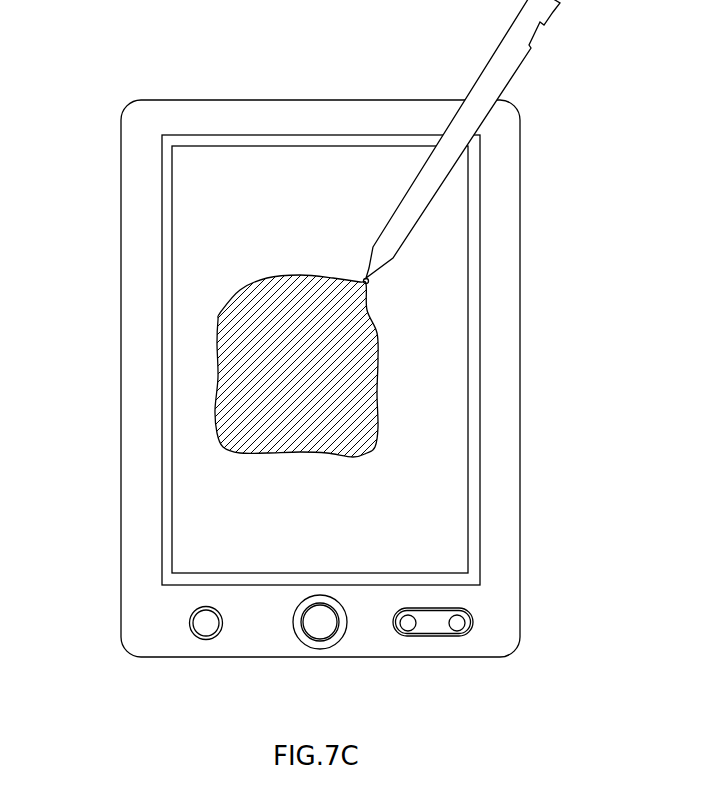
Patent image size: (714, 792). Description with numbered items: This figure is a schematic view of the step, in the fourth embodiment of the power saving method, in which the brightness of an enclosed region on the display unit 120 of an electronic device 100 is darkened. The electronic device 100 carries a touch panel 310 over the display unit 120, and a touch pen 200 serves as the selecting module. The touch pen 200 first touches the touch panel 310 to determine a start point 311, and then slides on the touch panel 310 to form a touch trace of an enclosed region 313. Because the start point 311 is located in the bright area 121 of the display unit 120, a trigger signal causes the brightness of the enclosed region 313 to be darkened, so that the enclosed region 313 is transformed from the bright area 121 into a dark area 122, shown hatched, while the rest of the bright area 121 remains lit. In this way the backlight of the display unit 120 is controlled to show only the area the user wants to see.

The electronic device 100 is at (197, 70).
The display unit 120 is at (162, 303).
The touch panel 310 is at (172, 354).
The bright area 121 is at (428, 510).
The dark area 122 is at (298, 370).
The enclosed region 313 is at (378, 378).
The start point 311 is at (367, 284).
The touch pen 200 is at (483, 72).